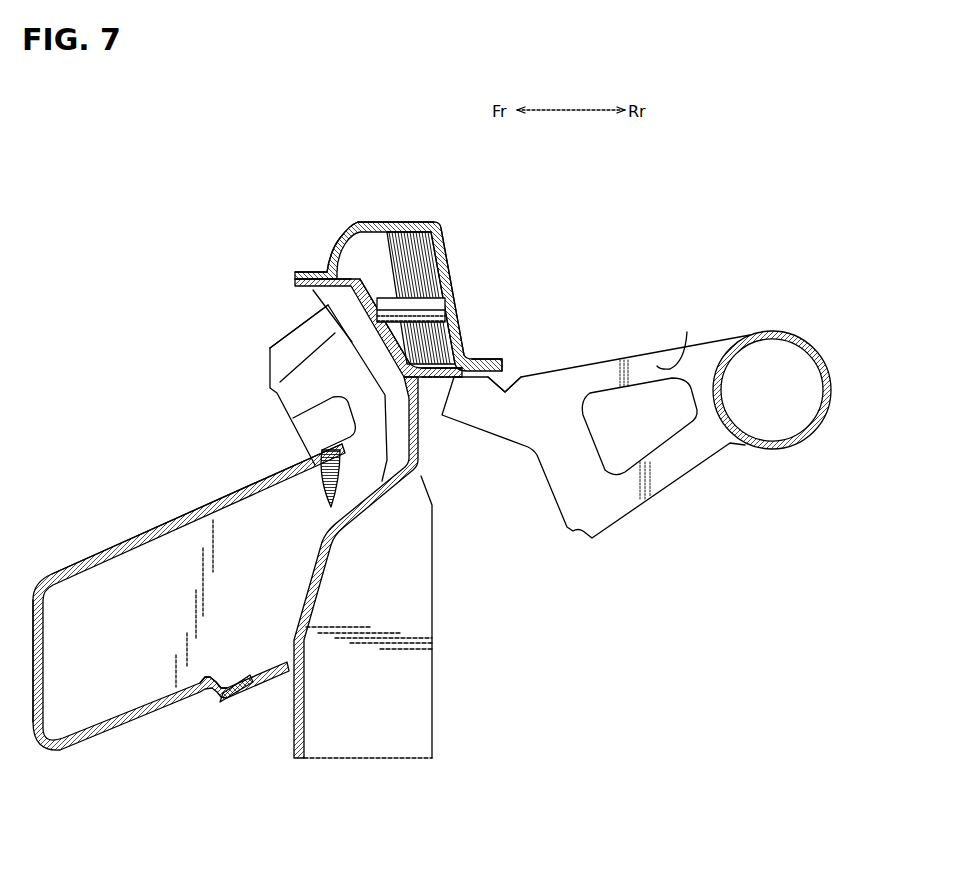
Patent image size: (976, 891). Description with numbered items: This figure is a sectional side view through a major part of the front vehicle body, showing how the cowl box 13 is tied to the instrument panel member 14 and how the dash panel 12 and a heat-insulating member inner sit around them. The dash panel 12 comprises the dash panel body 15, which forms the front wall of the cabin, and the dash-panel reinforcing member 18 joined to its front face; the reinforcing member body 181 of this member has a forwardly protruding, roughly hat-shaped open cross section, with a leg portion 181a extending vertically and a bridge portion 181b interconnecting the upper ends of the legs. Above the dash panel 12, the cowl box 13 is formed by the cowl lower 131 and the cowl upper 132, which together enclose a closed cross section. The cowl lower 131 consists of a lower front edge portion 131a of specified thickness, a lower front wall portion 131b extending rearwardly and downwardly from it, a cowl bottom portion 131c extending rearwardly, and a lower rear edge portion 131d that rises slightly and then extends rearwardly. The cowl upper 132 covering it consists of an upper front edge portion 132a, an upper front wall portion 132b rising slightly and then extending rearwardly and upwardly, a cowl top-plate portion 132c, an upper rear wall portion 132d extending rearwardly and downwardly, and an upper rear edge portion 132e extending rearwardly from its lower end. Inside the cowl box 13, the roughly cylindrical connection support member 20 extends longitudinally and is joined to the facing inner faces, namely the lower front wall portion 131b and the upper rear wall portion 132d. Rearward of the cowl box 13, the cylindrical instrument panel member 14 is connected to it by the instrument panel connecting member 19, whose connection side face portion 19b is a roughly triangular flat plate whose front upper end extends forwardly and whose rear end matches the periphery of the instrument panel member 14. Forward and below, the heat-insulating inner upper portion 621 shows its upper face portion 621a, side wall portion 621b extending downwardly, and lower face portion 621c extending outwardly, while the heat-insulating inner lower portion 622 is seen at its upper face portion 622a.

The dash panel 12 is at (321, 524).
The cowl box 13 is at (392, 304).
The cowl lower 131 is at (392, 322).
The lower front edge portion 131a is at (310, 292).
The lower front wall portion 131b is at (372, 305).
The cowl bottom portion 131c is at (437, 380).
The lower rear edge portion 131d is at (508, 390).
The cowl upper 132 is at (388, 259).
The upper front edge portion 132a is at (300, 270).
The upper front wall portion 132b is at (330, 240).
The cowl top-plate portion 132c is at (405, 220).
The upper rear wall portion 132d is at (467, 313).
The upper rear edge portion 132e is at (480, 357).
The instrument panel member 14 is at (793, 447).
The dash panel body 15 is at (303, 725).
The dash-panel reinforcing member 18 is at (231, 398).
The reinforcing member body 181 is at (233, 406).
The leg portion 181a is at (358, 472).
The bridge portion 181b is at (277, 357).
The instrument panel connecting member 19 is at (586, 452).
The connection side face portion 19b is at (687, 332).
The connection support member 20 is at (427, 297).
The heat-insulating inner upper portion 621 is at (189, 659).
The upper face portion 621a is at (73, 577).
The side wall portion 621b is at (43, 673).
The lower face portion 621c is at (158, 708).
The heat-insulating inner lower portion 622 is at (254, 749).
The upper face portion 622a is at (265, 692).